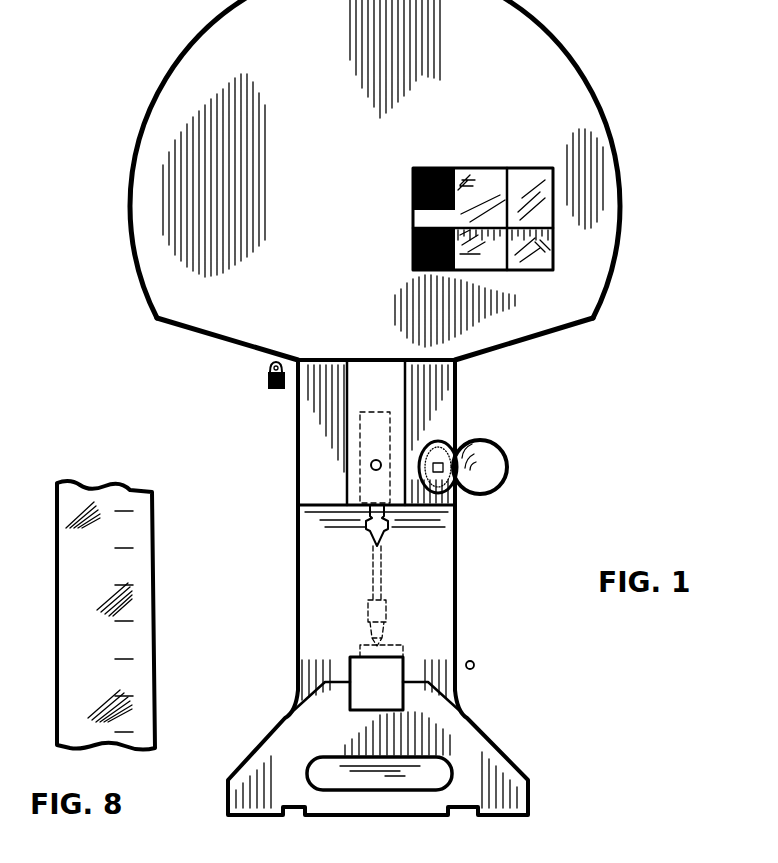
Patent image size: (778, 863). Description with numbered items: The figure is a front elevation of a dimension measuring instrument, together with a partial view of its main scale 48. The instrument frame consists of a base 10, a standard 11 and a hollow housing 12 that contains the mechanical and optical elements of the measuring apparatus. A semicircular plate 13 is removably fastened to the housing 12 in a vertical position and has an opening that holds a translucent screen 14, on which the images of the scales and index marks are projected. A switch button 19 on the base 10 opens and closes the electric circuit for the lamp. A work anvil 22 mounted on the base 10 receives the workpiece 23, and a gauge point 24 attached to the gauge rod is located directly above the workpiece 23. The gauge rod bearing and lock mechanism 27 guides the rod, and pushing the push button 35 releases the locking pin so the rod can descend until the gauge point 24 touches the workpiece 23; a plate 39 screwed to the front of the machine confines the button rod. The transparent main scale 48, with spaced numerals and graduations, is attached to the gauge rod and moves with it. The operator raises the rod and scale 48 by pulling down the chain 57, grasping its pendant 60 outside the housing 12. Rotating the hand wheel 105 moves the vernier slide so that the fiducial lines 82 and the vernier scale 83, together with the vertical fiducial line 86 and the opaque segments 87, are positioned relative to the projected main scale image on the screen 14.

In FIG. 1, the base 10 is at (487, 760).
In FIG. 1, the standard 11 is at (435, 578).
In FIG. 1, the hollow housing 12 is at (619, 90).
In FIG. 1, the semicircular plate 13 is at (571, 304).
In FIG. 1, the translucent screen 14 is at (533, 207).
In FIG. 1, the switch button 19 is at (467, 660).
In FIG. 1, the work anvil 22 is at (360, 669).
In FIG. 1, the workpiece 23 is at (357, 644).
In FIG. 1, the gauge point 24 is at (380, 541).
In FIG. 1, the gauge rod bearing and lock mechanism 27 is at (385, 433).
In FIG. 1, the push button 35 is at (370, 466).
In FIG. 1, the plate 39 is at (357, 388).
In FIG. 8, the main scale 48 is at (63, 600).
In FIG. 1, the chain 57 is at (266, 360).
In FIG. 1, the pendant 60 is at (262, 380).
In FIG. 1, the fiducial lines 82 is at (552, 224).
In FIG. 1, the vernier scale 83 is at (540, 248).
In FIG. 1, the fiducial line 86 is at (513, 182).
In FIG. 1, the opaque segments 87 is at (413, 247).
In FIG. 1, the hand wheel 105 is at (490, 467).